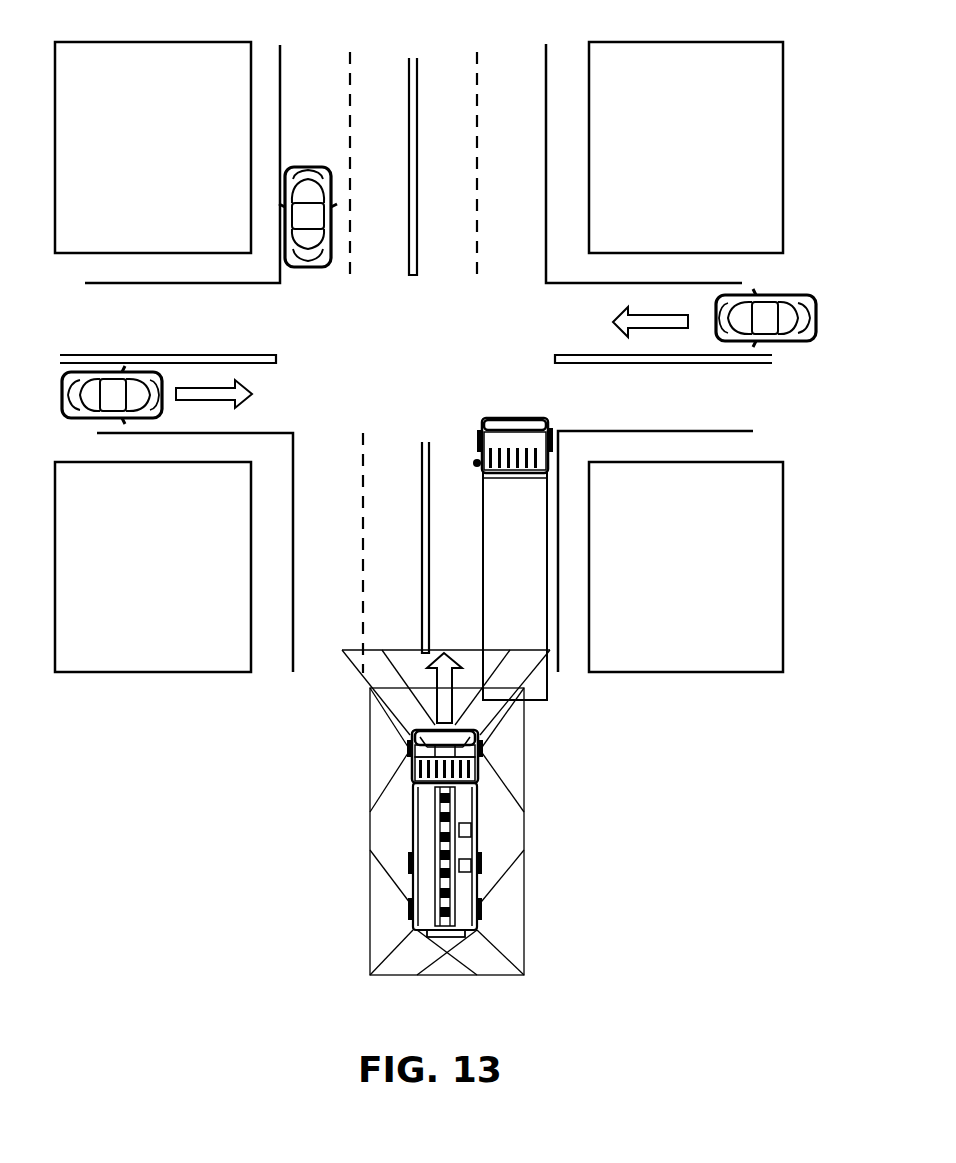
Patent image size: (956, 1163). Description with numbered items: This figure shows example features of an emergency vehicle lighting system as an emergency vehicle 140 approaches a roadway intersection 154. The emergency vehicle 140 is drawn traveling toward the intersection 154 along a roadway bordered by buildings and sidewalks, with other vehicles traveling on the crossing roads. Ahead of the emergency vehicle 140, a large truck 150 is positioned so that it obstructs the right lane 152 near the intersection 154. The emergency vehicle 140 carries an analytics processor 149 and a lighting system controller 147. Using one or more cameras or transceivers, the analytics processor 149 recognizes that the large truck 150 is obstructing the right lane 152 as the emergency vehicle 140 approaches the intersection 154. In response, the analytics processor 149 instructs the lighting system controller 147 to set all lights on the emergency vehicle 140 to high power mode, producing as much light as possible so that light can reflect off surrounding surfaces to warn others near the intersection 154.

The emergency vehicle 140 is at (398, 824).
The lighting system controller 147 is at (475, 867).
The analytics processor 149 is at (473, 833).
The large truck 150 is at (502, 513).
The right lane 152 is at (540, 410).
The intersection 154 is at (474, 298).